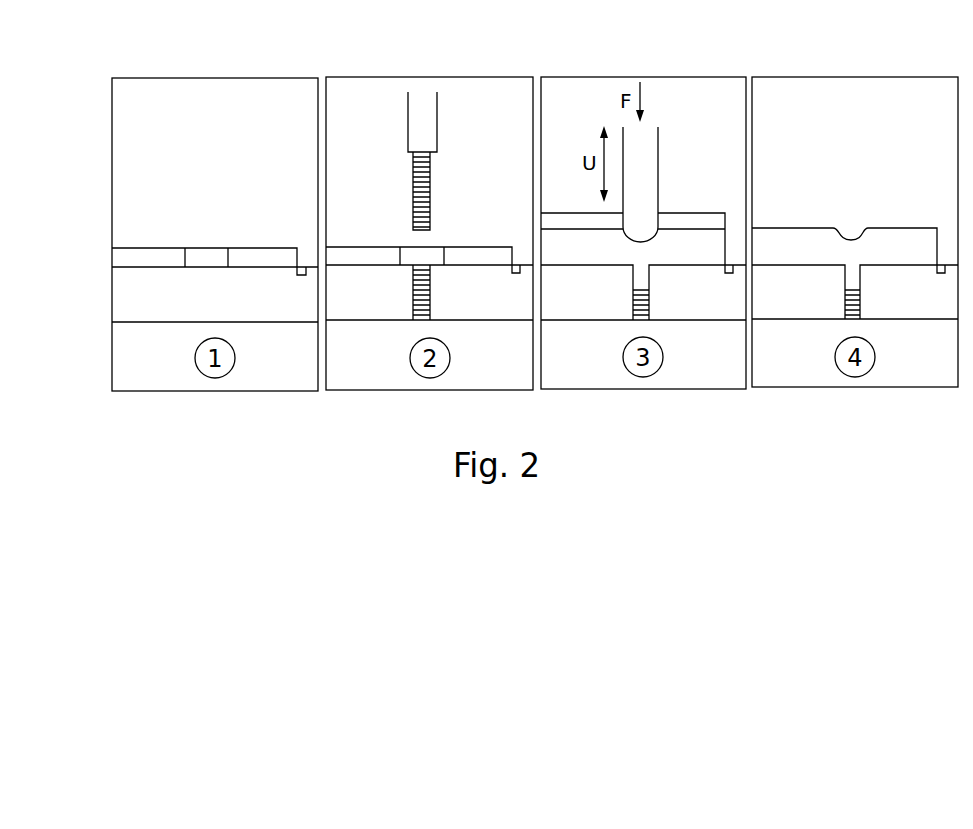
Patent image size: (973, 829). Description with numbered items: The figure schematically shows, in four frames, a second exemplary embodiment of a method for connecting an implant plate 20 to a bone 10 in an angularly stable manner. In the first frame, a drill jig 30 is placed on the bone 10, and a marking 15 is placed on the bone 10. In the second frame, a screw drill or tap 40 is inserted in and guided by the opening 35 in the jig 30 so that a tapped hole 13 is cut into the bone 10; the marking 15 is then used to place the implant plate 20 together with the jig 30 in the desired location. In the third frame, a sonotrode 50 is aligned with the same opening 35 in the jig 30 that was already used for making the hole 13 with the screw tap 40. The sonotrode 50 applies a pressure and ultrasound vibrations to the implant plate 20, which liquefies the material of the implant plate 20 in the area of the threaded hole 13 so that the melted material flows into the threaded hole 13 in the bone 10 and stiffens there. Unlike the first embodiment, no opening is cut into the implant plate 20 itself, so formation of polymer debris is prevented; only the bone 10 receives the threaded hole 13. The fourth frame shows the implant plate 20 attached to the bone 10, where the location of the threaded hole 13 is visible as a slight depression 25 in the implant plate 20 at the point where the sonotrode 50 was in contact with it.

The bone 10 is at (127, 308).
The drill jig 30 is at (127, 258).
The opening 35 is at (205, 255).
The screw drill or tap 40 is at (423, 125).
The tapped hole 13 is at (417, 297).
The marking 15 is at (520, 263).
The sonotrode 50 is at (633, 138).
The implant plate 20 is at (695, 243).
The depression 25 is at (850, 232).